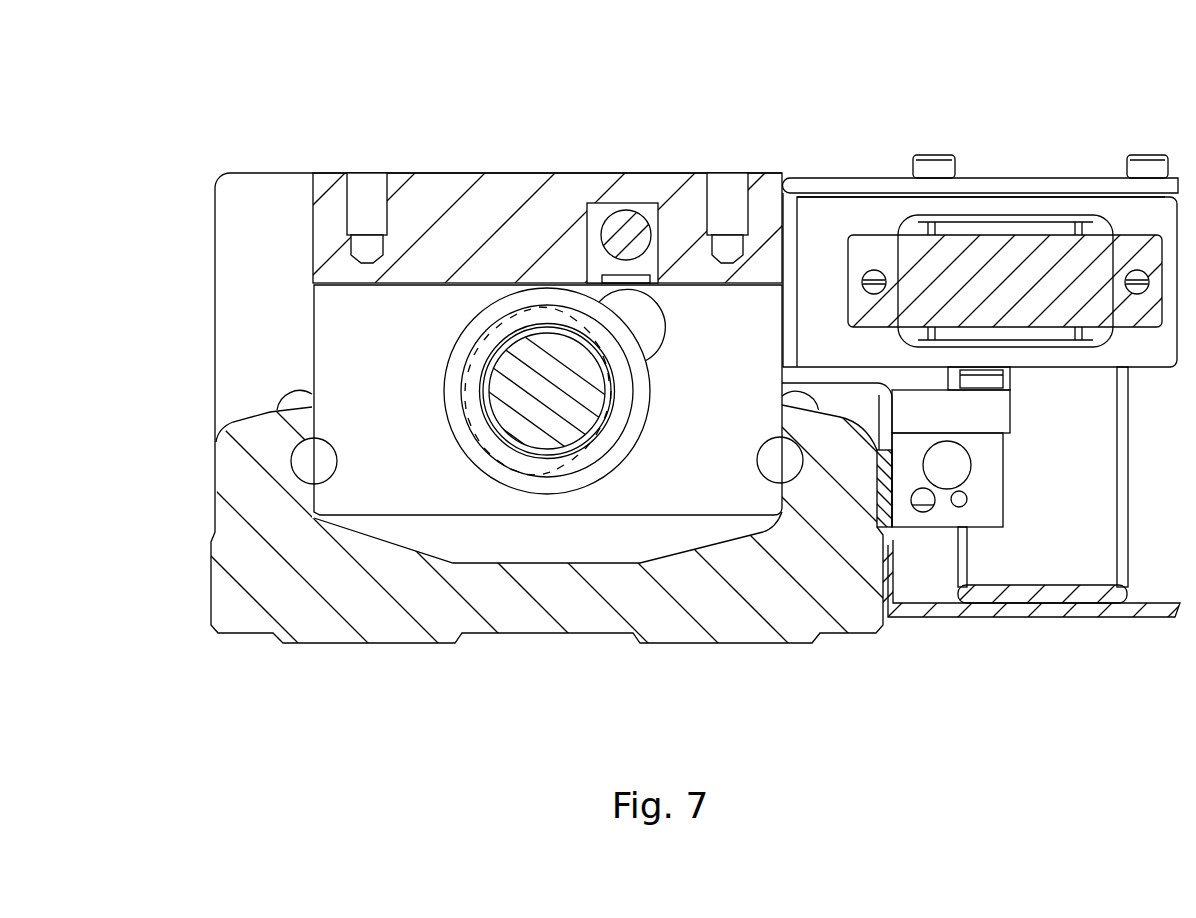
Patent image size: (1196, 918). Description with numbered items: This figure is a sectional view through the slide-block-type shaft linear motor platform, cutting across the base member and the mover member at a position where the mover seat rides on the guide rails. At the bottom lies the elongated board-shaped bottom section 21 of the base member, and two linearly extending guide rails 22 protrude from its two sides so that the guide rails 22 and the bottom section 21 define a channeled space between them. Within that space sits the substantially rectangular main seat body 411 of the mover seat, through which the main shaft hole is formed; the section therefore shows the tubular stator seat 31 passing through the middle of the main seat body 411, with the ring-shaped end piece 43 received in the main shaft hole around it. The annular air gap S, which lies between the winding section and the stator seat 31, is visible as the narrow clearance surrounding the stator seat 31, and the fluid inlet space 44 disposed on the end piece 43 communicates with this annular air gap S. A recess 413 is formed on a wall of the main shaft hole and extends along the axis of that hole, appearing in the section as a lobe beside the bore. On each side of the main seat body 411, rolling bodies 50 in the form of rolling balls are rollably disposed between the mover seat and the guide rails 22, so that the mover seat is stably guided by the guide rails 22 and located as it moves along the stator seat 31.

The bottom section 21 is at (498, 605).
The guide rails 22 is at (247, 478).
The stator seat 31 is at (518, 342).
The annular air gap S is at (549, 327).
The main seat body 411 is at (697, 303).
The recess 413 is at (667, 337).
The end pieces 43 is at (625, 447).
The fluid inlet spaces 44 is at (578, 452).
The rolling bodies 50 is at (318, 467).